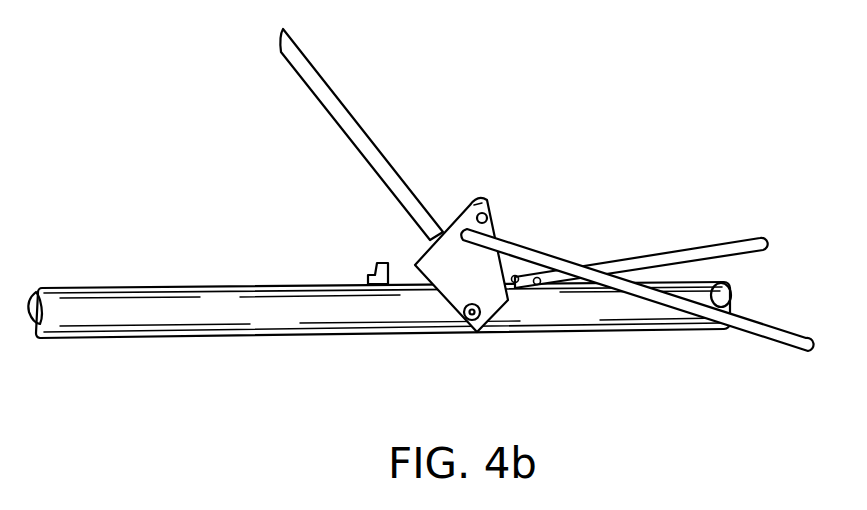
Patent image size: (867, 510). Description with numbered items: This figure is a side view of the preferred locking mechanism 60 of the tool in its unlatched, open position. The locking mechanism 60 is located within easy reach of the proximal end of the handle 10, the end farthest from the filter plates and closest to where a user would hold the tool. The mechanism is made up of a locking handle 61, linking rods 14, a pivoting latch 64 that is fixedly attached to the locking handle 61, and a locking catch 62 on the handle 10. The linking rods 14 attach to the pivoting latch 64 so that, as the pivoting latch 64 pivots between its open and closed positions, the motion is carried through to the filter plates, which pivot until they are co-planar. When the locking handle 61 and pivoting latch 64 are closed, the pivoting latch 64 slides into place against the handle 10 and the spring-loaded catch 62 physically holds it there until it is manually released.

The handle 10 is at (128, 313).
The linking rods 14 is at (558, 258).
The locking mechanism 60 is at (562, 166).
The locking handle 61 is at (328, 98).
The locking catch 62 is at (376, 263).
The pivoting latch 64 is at (490, 197).